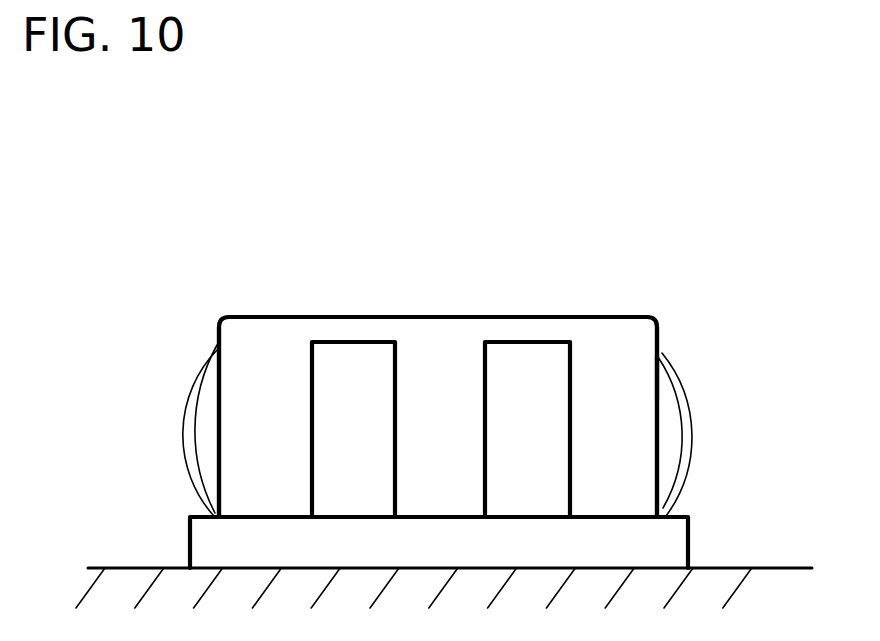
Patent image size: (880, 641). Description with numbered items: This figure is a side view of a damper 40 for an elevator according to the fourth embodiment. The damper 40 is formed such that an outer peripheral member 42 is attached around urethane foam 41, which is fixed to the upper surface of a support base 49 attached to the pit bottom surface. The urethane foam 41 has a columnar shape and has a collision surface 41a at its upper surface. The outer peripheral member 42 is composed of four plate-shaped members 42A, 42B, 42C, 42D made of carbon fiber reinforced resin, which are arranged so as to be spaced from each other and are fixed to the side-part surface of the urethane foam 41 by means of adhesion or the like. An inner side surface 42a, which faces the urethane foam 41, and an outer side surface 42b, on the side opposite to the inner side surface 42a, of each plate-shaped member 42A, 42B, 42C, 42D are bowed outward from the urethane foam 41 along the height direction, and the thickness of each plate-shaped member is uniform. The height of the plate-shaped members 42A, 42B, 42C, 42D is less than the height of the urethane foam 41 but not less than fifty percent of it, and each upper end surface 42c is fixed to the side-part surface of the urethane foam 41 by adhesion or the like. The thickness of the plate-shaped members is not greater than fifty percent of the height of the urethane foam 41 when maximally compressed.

The damper for elevator 40 is at (442, 143).
The urethane foam 41 is at (243, 421).
The collision surface 41a is at (238, 316).
The outer peripheral member 42 is at (747, 272).
The plate-shaped member 42A is at (227, 338).
The plate-shaped member 42B is at (332, 375).
The plate-shaped member 42C is at (514, 367).
The plate-shaped member 42D is at (670, 365).
The inner side surface 42a is at (678, 424).
The outer side surface 42b is at (668, 498).
The upper end surface 42c is at (668, 392).
The support base 49 is at (197, 532).